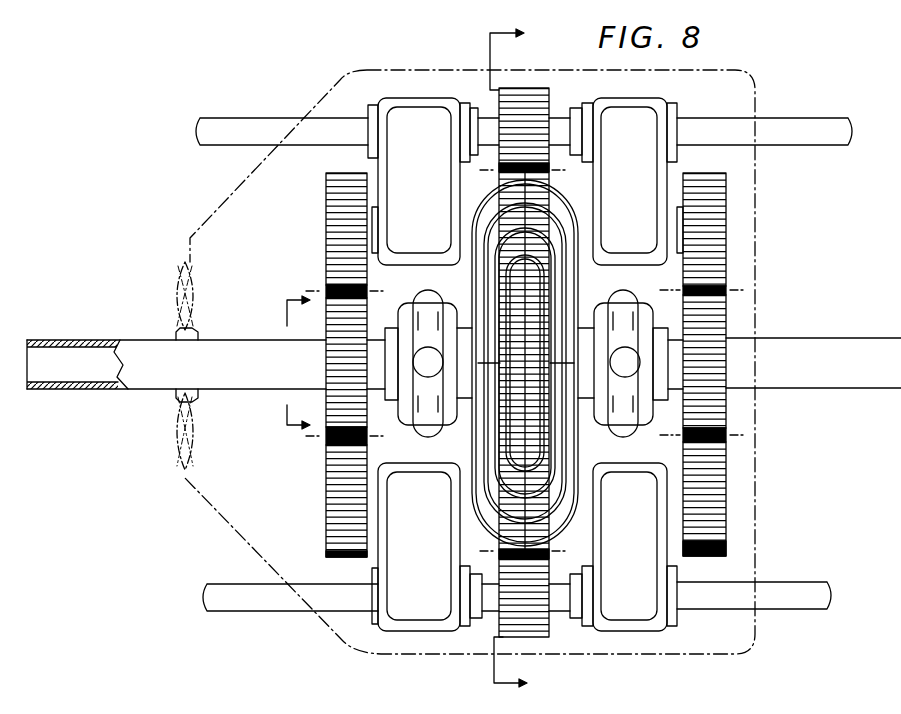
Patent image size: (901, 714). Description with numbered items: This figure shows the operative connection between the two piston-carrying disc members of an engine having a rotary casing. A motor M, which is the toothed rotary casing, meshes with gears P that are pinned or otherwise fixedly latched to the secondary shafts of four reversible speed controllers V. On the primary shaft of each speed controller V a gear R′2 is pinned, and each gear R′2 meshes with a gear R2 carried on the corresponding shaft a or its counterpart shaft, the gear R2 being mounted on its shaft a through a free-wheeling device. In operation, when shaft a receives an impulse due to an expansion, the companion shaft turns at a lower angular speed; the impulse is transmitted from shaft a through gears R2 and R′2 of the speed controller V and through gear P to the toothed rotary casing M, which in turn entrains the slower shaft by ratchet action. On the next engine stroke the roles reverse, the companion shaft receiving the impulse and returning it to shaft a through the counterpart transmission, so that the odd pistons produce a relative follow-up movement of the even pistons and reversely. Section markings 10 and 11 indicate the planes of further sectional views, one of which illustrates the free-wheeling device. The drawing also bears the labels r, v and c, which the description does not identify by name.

The reversible speed controller V is at (425, 115).
The gear P is at (527, 103).
The gear R′2 is at (338, 255).
The gear R2 is at (352, 396).
The motor M is at (557, 263).
The rotor coupling r is at (405, 315).
The shaft a is at (88, 372).
The propeller v is at (183, 438).
The casing outline c is at (756, 637).
The section line 10- 10 is at (508, 351).
The section line 11- 11 is at (295, 369).